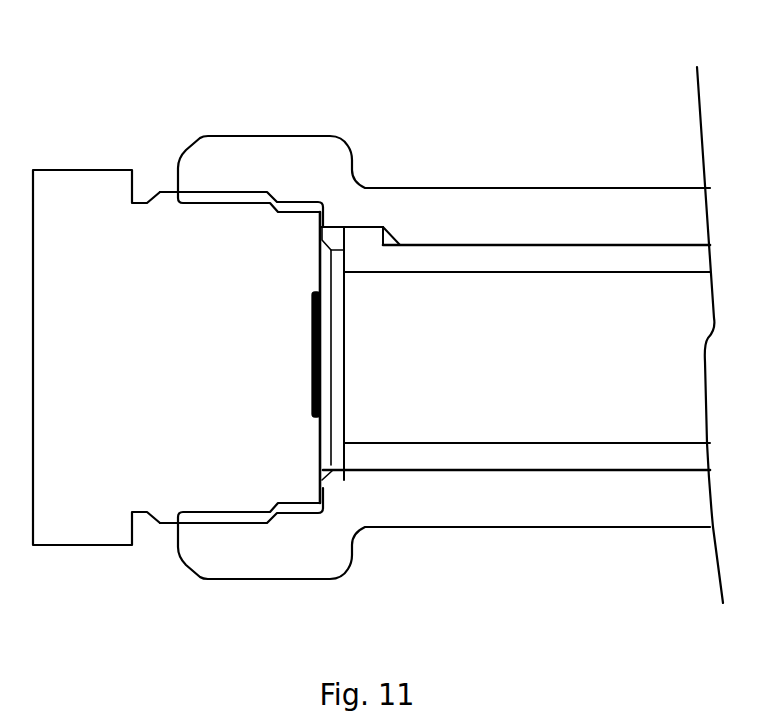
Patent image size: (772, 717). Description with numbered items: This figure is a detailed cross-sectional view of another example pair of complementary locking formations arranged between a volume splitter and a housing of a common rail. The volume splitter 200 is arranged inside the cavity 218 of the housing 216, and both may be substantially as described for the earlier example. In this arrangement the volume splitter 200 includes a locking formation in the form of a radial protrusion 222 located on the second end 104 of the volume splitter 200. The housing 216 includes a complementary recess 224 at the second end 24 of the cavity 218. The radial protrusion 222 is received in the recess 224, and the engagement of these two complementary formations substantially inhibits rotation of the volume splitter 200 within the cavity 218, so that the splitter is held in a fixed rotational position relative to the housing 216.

The second end 24 is at (340, 470).
The second end 104 is at (357, 453).
The volume splitter 200 is at (473, 455).
The housing 216 is at (565, 202).
The cavity 218 is at (510, 243).
The radial protrusion 222 is at (363, 240).
The recess 224 is at (382, 227).